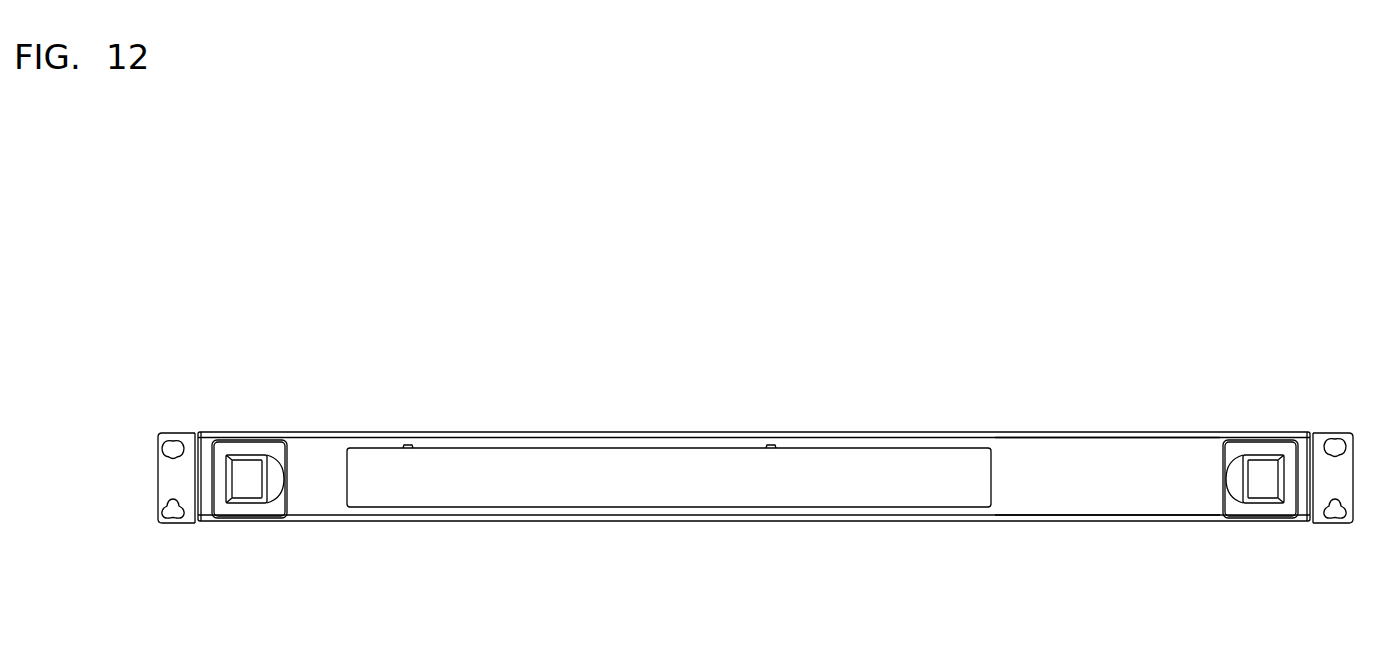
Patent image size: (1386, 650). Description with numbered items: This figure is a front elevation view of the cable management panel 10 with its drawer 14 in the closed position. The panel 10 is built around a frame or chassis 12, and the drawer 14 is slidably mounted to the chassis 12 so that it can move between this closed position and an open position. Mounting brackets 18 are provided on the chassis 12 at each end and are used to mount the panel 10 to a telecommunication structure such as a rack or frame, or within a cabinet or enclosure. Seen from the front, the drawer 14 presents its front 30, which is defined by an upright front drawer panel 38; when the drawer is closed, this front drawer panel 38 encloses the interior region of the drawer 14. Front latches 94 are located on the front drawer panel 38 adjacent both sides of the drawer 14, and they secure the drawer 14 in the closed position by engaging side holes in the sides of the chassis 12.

The cable management panel 10 is at (382, 387).
The chassis 12 is at (1032, 431).
The drawer 14 is at (1128, 500).
The mounting bracket 18 is at (190, 517).
The front 30 is at (503, 493).
The upright front drawer panel 38 is at (1027, 502).
The front latch 94 is at (275, 510).